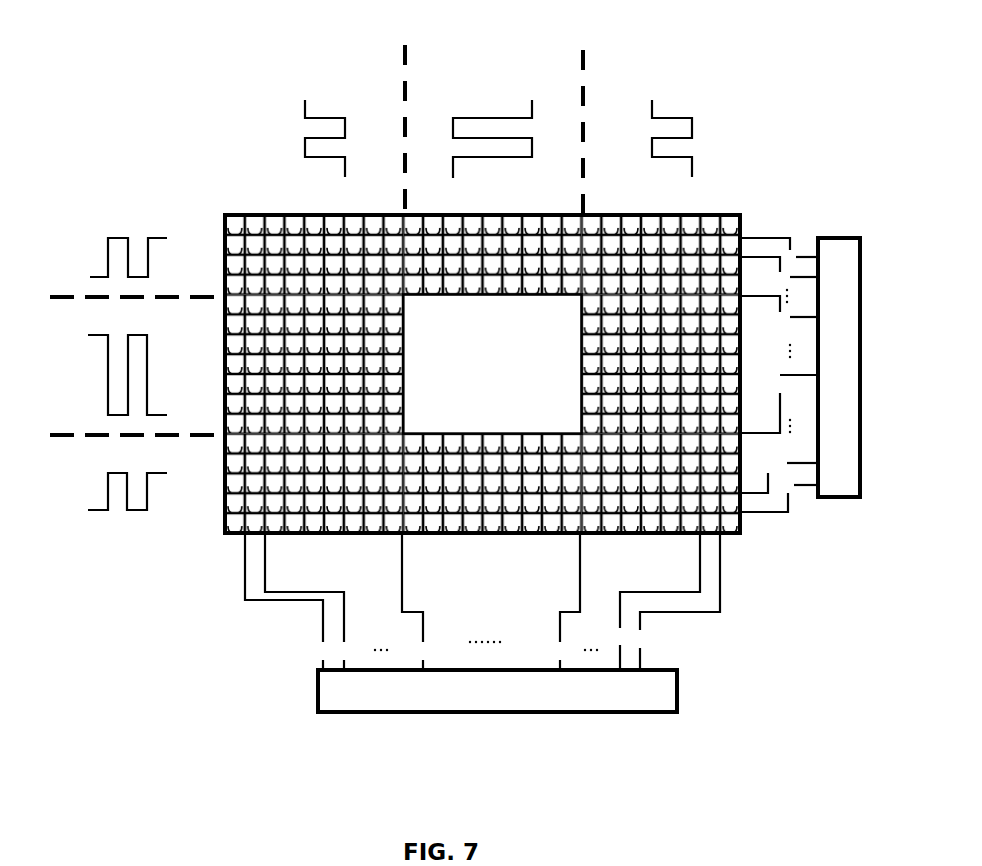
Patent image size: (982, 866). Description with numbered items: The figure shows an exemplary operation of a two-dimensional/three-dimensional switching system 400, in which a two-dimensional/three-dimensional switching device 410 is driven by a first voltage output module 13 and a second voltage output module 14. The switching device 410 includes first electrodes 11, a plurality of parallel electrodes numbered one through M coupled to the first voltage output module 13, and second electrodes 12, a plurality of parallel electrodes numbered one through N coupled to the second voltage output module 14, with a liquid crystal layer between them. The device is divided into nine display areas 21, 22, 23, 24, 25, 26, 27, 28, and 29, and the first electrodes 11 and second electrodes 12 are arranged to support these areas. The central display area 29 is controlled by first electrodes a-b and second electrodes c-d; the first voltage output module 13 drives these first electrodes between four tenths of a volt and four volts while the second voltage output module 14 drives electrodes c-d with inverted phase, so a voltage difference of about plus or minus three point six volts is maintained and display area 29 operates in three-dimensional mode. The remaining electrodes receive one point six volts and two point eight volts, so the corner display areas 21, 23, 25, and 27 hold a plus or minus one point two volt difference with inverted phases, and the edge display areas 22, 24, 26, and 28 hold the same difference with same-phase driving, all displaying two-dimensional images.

The 2D/3D switching system 400 is at (455, 367).
The 2D/3D switching device 410 is at (315, 228).
The first electrodes 11 is at (748, 238).
The second electrodes 12 is at (243, 548).
The first voltage output module 13 is at (839, 367).
The second voltage output module 14 is at (497, 691).
The display area 21 is at (667, 482).
The display area 22 is at (485, 492).
The display area 23 is at (340, 492).
The display area 24 is at (262, 376).
The display area 25 is at (225, 216).
The display area 26 is at (532, 215).
The display area 27 is at (647, 237).
The display area 28 is at (718, 360).
The display area 29 is at (492, 364).